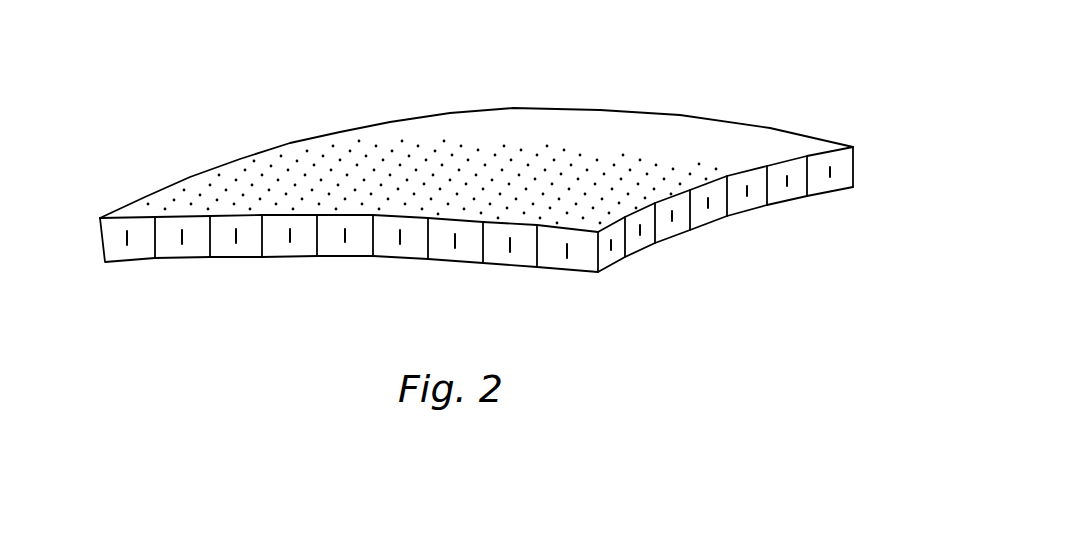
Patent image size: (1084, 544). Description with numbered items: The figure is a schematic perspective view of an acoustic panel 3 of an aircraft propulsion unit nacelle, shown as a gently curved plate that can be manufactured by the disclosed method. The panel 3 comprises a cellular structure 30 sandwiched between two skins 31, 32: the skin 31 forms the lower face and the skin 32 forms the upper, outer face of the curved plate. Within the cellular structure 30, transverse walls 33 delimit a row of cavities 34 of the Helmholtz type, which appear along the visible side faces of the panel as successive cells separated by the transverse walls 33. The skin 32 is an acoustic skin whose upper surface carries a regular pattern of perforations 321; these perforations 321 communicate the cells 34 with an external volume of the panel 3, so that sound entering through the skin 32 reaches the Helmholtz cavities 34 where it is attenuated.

The panel 3 is at (663, 47).
The cellular structure 30 is at (884, 164).
The skin 31 is at (867, 192).
The skin 32 is at (866, 139).
The perforations 321 is at (207, 185).
The transverse walls 33 is at (212, 242).
The cavities 34 is at (245, 245).